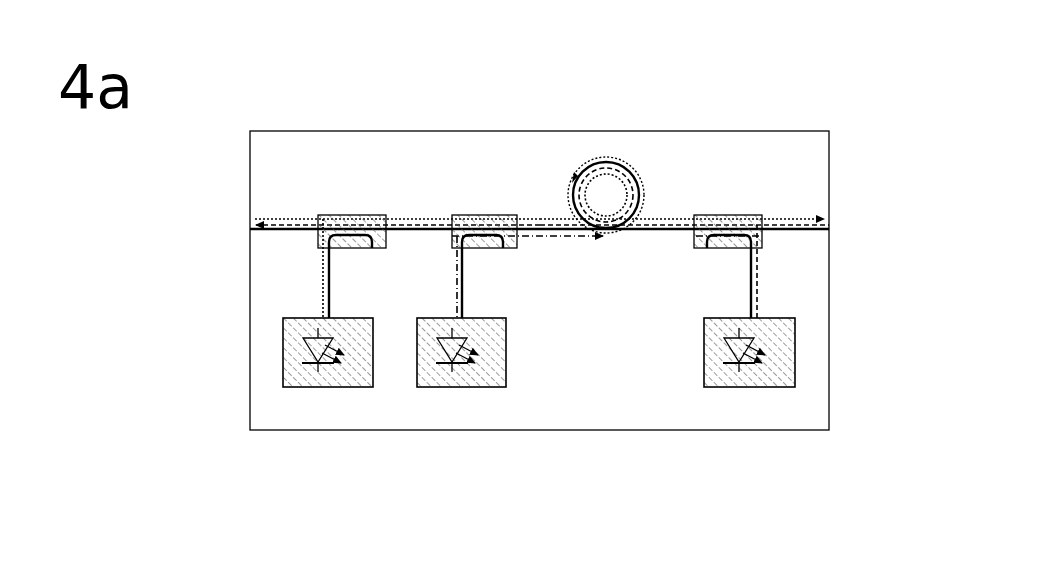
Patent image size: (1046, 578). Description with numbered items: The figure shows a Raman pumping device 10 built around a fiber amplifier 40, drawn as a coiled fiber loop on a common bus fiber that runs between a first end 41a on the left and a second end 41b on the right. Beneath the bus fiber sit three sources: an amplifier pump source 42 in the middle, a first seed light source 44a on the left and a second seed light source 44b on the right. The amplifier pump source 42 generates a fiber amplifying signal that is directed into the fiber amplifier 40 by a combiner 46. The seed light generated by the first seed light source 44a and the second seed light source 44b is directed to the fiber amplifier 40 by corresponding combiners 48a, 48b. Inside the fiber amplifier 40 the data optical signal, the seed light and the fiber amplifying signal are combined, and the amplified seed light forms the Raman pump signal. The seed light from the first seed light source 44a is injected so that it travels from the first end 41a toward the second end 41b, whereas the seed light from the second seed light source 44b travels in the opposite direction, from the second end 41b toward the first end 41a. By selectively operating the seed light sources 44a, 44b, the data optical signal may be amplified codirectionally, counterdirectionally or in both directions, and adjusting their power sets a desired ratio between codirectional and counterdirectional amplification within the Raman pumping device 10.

The Raman pumping device 10 is at (604, 452).
The fiber amplifier 40 is at (607, 158).
The first end 41a is at (247, 222).
The second end 41b is at (832, 218).
The amplifier pump source 42 is at (462, 388).
The first seed light source 44a is at (328, 388).
The second seed light source 44b is at (751, 388).
The combiner 46 is at (485, 215).
The combiner 48a is at (352, 215).
The combiner 48b is at (728, 215).